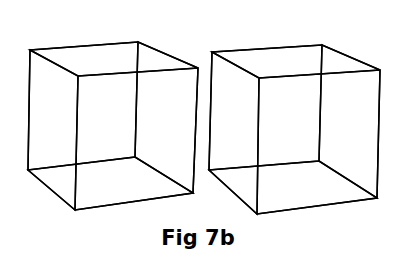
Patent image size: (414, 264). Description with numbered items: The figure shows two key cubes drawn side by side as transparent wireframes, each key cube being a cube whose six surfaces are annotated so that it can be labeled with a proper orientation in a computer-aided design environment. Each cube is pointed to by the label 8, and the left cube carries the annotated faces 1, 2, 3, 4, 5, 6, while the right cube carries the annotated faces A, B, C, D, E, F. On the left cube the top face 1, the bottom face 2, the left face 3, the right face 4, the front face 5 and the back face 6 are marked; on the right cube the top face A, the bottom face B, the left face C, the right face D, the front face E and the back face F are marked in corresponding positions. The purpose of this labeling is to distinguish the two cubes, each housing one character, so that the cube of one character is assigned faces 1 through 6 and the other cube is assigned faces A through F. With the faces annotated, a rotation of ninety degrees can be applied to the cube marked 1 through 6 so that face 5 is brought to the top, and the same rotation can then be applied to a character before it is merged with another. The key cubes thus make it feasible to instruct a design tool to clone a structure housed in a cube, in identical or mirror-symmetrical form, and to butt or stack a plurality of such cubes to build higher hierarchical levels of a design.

The cube 8 is at (204, 119).
The annotated face 1 is at (114, 59).
The annotated face 2 is at (110, 183).
The annotated face 3 is at (53, 130).
The annotated face 4 is at (166, 117).
The annotated face 5 is at (136, 139).
The annotated face 6 is at (83, 106).
The annotated face A is at (296, 61).
The annotated face B is at (293, 187).
The annotated face C is at (234, 133).
The annotated face D is at (349, 121).
The annotated face E is at (318, 142).
The annotated face F is at (265, 107).